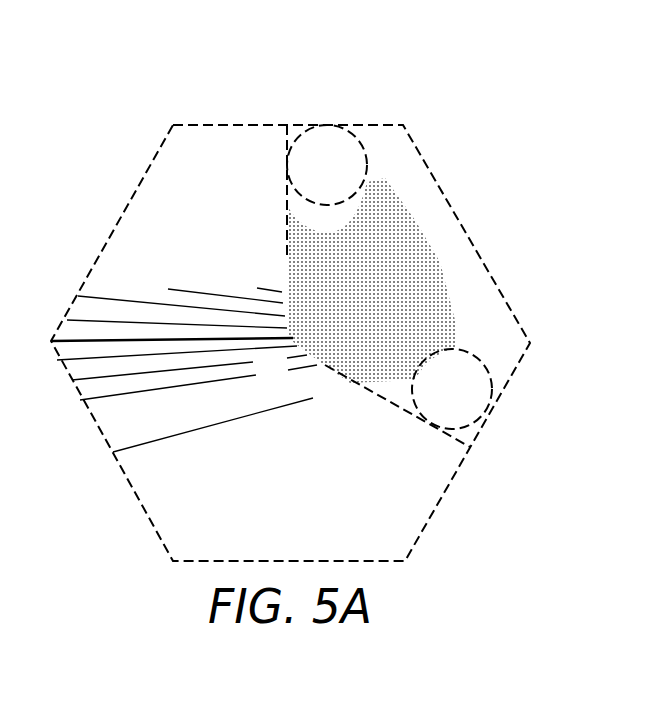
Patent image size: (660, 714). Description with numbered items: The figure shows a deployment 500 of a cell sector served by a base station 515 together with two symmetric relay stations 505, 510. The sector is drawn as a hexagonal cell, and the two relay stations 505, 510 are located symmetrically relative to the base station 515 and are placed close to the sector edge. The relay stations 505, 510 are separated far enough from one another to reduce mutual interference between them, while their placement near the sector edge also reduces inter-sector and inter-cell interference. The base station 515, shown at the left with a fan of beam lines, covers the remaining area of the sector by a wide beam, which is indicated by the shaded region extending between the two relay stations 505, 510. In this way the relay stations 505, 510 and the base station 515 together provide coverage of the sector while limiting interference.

The coverage area / cell 500 is at (487, 65).
The relay station 505 is at (327, 131).
The relay station 510 is at (436, 423).
The base station 515 is at (270, 378).